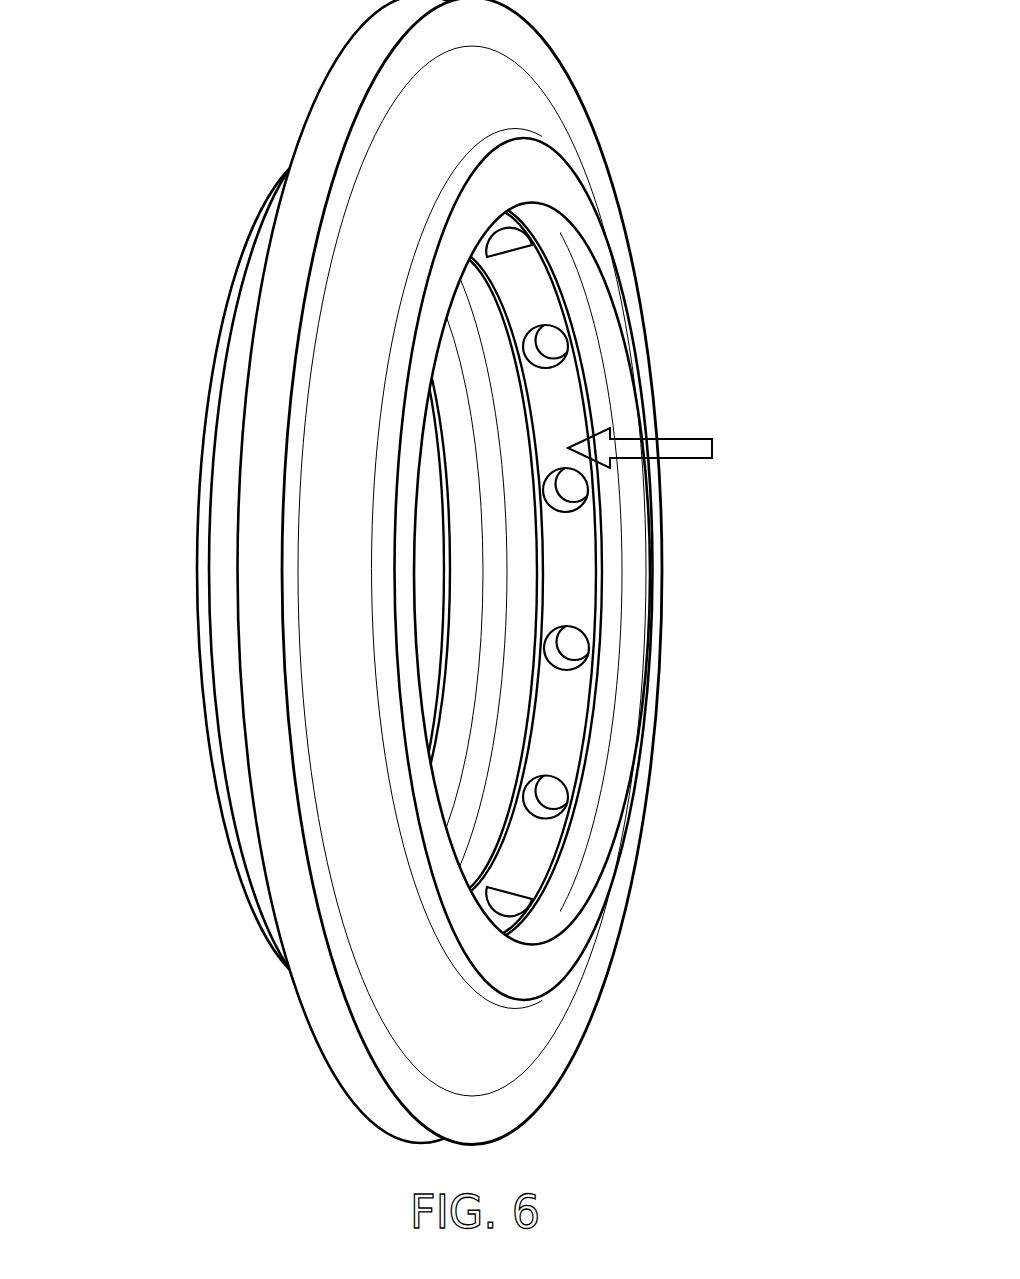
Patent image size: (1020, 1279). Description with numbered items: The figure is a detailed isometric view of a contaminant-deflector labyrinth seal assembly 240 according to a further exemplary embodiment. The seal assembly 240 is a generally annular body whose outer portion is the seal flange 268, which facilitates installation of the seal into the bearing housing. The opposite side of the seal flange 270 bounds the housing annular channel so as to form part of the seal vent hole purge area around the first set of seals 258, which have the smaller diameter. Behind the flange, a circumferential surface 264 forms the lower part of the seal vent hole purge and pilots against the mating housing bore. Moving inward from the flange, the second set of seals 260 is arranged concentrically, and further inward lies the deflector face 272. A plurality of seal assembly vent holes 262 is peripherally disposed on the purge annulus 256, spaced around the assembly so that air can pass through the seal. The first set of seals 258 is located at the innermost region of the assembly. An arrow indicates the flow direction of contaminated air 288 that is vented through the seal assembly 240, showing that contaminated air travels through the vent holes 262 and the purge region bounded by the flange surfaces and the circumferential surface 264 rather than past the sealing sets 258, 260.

The contaminant-deflector labyrinth seal assembly 240 is at (196, 128).
The purge annulus 256 is at (530, 845).
The first set of seals 258 is at (440, 540).
The second set of seals 260 is at (653, 535).
The seal assembly vent holes 262 is at (548, 345).
The circumferential surface 264 is at (225, 388).
The seal flange 268 is at (520, 88).
The opposite side of the seal flange 270 is at (315, 103).
The deflector face 272 is at (565, 708).
The flow direction of contaminated air 288 is at (713, 420).